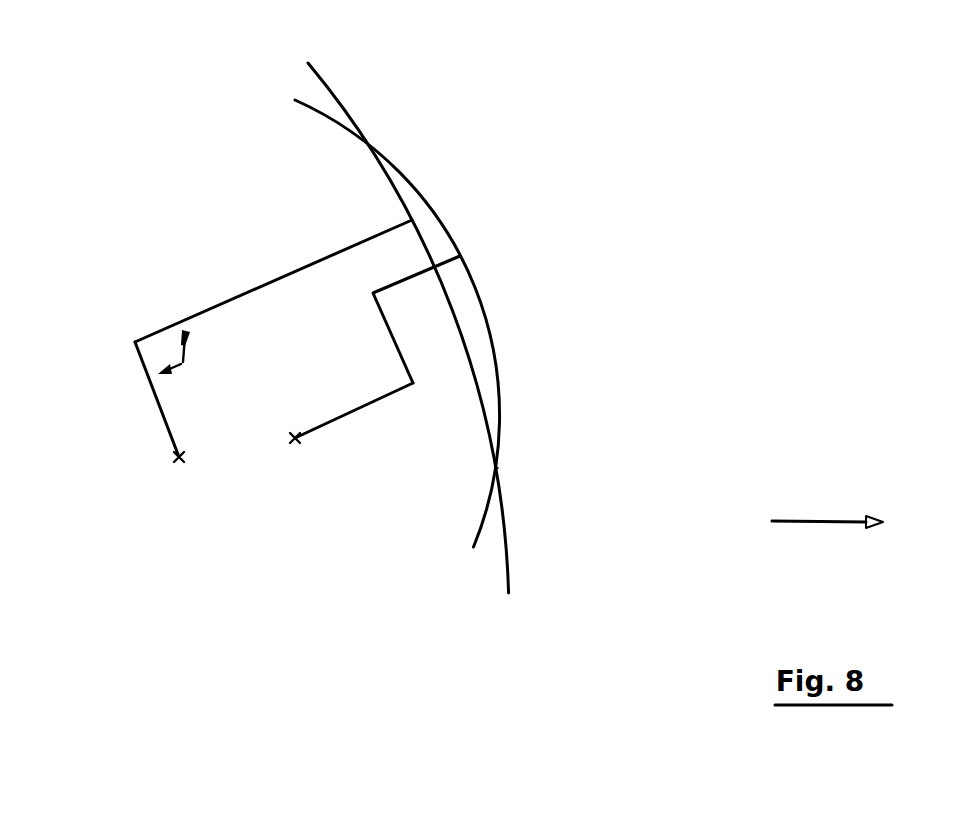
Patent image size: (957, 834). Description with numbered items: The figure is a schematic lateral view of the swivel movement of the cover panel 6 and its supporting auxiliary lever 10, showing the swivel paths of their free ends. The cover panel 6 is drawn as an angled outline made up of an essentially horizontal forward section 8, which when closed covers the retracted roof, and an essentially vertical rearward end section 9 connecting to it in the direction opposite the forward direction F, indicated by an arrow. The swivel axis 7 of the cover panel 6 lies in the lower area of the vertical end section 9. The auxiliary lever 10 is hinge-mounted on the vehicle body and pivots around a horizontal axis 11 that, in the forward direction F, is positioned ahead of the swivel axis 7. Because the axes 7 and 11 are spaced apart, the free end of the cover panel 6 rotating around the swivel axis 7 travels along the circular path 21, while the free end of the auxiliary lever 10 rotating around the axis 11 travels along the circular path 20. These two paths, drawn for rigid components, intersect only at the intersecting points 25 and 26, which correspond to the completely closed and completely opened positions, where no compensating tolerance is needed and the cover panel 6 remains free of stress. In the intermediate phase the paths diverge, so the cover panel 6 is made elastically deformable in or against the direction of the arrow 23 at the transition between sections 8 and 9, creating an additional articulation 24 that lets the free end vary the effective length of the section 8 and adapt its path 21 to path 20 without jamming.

The cover panel 6 is at (247, 337).
The swivel axis 7 is at (180, 460).
The horizontal forward section 8 is at (258, 290).
The vertical rearward end section 9 is at (158, 399).
The auxiliary lever 10 is at (390, 397).
The horizontal axis 11 is at (297, 445).
The circular path 20 is at (480, 300).
The circular path 21 is at (454, 318).
The arrow 23 is at (182, 363).
The additional articulation 24 is at (79, 277).
The intersecting point 25 is at (499, 466).
The intersecting point 26 is at (366, 140).
The forward direction F is at (820, 520).